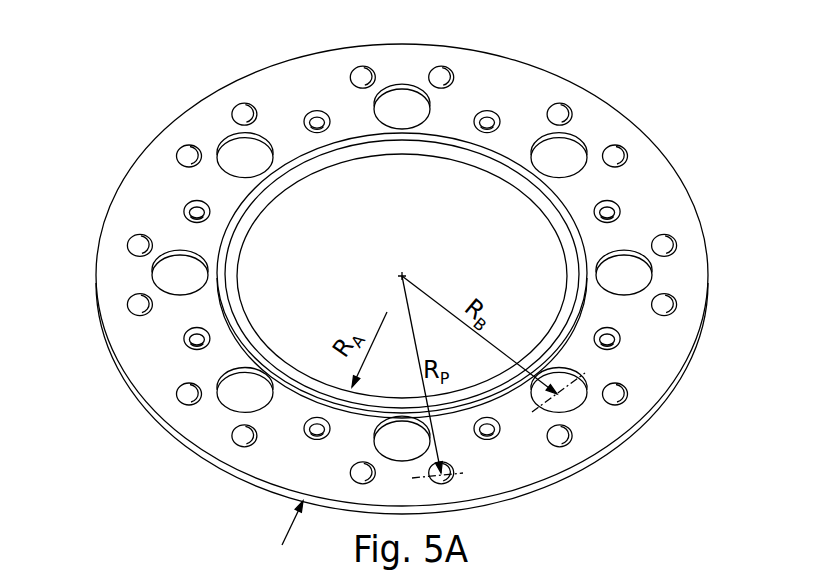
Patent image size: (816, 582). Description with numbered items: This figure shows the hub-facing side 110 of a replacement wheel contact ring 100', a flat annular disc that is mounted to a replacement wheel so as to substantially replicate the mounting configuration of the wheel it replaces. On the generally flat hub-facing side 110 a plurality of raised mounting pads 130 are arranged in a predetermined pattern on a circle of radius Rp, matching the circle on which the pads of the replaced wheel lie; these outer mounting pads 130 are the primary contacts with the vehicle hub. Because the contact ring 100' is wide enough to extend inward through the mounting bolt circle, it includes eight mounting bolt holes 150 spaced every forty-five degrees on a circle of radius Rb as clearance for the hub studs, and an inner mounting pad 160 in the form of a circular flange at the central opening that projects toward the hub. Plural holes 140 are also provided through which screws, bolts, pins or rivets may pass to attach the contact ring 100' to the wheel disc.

The hub-facing side 110 is at (498, 62).
The replacement wheel contact ring 100' is at (119, 96).
The mounting pads 130 is at (618, 142).
The holes 140 is at (616, 206).
The mounting bolt holes 150 is at (258, 160).
The inner mounting pad 160 is at (448, 153).